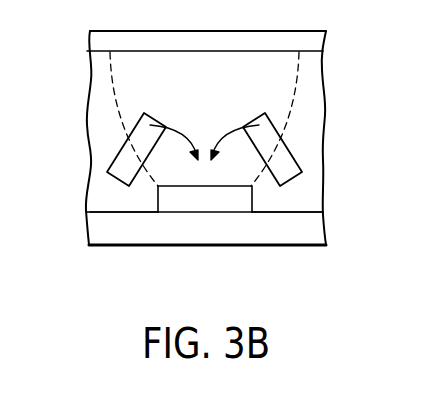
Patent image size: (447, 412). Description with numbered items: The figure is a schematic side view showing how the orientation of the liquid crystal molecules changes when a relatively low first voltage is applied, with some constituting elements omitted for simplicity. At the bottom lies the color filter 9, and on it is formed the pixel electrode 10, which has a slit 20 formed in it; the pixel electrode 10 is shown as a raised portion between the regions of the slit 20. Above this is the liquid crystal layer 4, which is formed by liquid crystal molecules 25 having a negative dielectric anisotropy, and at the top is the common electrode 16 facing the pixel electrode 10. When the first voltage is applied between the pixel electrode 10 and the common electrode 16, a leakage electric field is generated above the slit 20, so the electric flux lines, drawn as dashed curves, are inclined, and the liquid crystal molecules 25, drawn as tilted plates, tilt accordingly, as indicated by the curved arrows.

The common electrode 16 is at (325, 40).
The liquid crystal layer 4 is at (325, 110).
The color filter 9 is at (325, 227).
The pixel electrode 10 is at (205, 202).
The slit 20 is at (118, 202).
The liquid crystal molecule 25 is at (125, 157).